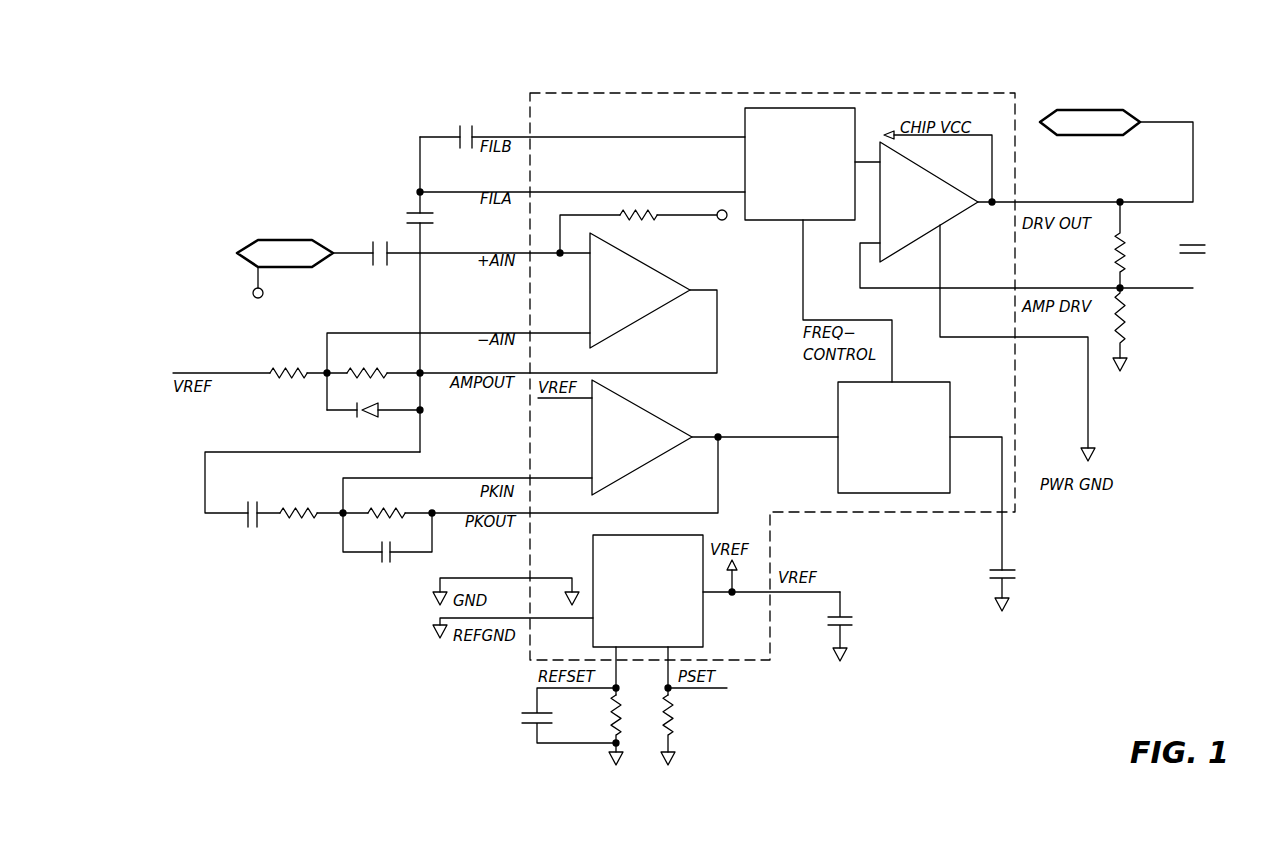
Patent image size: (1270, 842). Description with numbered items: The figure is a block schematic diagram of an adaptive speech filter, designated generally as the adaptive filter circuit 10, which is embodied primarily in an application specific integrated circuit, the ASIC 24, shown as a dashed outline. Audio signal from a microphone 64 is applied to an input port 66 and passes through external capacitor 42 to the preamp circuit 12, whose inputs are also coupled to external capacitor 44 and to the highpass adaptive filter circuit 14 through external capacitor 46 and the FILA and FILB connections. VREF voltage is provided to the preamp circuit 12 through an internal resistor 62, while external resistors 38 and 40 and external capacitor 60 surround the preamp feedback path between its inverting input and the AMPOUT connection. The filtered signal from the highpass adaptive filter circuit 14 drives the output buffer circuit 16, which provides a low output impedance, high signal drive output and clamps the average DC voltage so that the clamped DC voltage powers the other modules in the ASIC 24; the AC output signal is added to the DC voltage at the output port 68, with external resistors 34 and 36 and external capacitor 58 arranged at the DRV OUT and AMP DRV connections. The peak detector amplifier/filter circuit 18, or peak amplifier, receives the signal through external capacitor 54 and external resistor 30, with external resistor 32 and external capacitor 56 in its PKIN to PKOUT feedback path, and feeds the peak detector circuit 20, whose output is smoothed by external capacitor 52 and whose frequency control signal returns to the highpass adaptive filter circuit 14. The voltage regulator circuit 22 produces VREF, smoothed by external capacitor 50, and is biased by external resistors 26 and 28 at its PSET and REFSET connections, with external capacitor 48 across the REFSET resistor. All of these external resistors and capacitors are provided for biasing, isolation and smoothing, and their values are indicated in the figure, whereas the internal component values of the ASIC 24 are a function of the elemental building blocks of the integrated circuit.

The adaptive filter circuit 10 is at (247, 148).
The preamp circuit 12 is at (656, 312).
The highpass adaptive filter circuit 14 is at (856, 135).
The output buffer circuit 16 is at (934, 172).
The peak detector amplifier/filter circuit 18 is at (672, 420).
The peak detector circuit 20 is at (930, 380).
The voltage regulator circuit 22 is at (704, 540).
The ASIC 24 is at (1008, 515).
The external resistor 26 is at (674, 728).
The external resistor 28 is at (622, 728).
The external resistor 30 is at (318, 508).
The external resistor 32 is at (402, 508).
The external resistor 34 is at (1113, 247).
The external resistor 36 is at (1127, 335).
The external resistor 38 is at (268, 368).
The external resistor 40 is at (346, 368).
The external capacitor 42 is at (372, 249).
The external capacitor 44 is at (433, 226).
The external capacitor 46 is at (476, 128).
The external capacitor 48 is at (530, 712).
The external capacitor 50 is at (852, 632).
The external capacitor 52 is at (1010, 586).
The external capacitor 54 is at (246, 525).
The external capacitor 56 is at (383, 563).
The external capacitor 58 is at (1185, 258).
The external capacitor 60 is at (377, 403).
The internal resistor 62 is at (648, 222).
The microphone 64 is at (264, 292).
The input port 66 is at (267, 240).
The output port 68 is at (1086, 135).